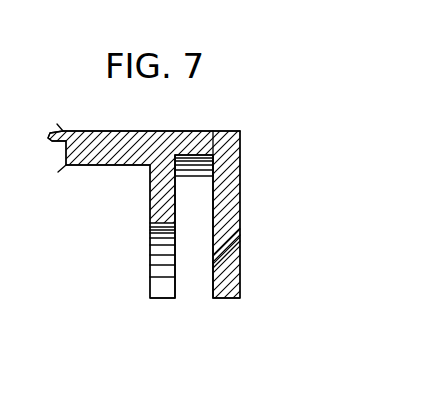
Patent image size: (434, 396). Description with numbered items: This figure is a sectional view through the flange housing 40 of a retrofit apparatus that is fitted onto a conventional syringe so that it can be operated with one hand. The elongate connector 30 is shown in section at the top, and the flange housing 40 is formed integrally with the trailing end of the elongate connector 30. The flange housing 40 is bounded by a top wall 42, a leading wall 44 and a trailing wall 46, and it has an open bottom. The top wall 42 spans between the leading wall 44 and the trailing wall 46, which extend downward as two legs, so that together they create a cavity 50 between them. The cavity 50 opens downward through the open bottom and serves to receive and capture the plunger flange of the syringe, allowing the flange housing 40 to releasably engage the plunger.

The elongate connector 30 is at (85, 138).
The flange housing 40 is at (250, 100).
The top wall 42 is at (198, 155).
The leading wall 44 is at (150, 202).
The trailing wall 46 is at (240, 213).
The cavity 50 is at (213, 239).